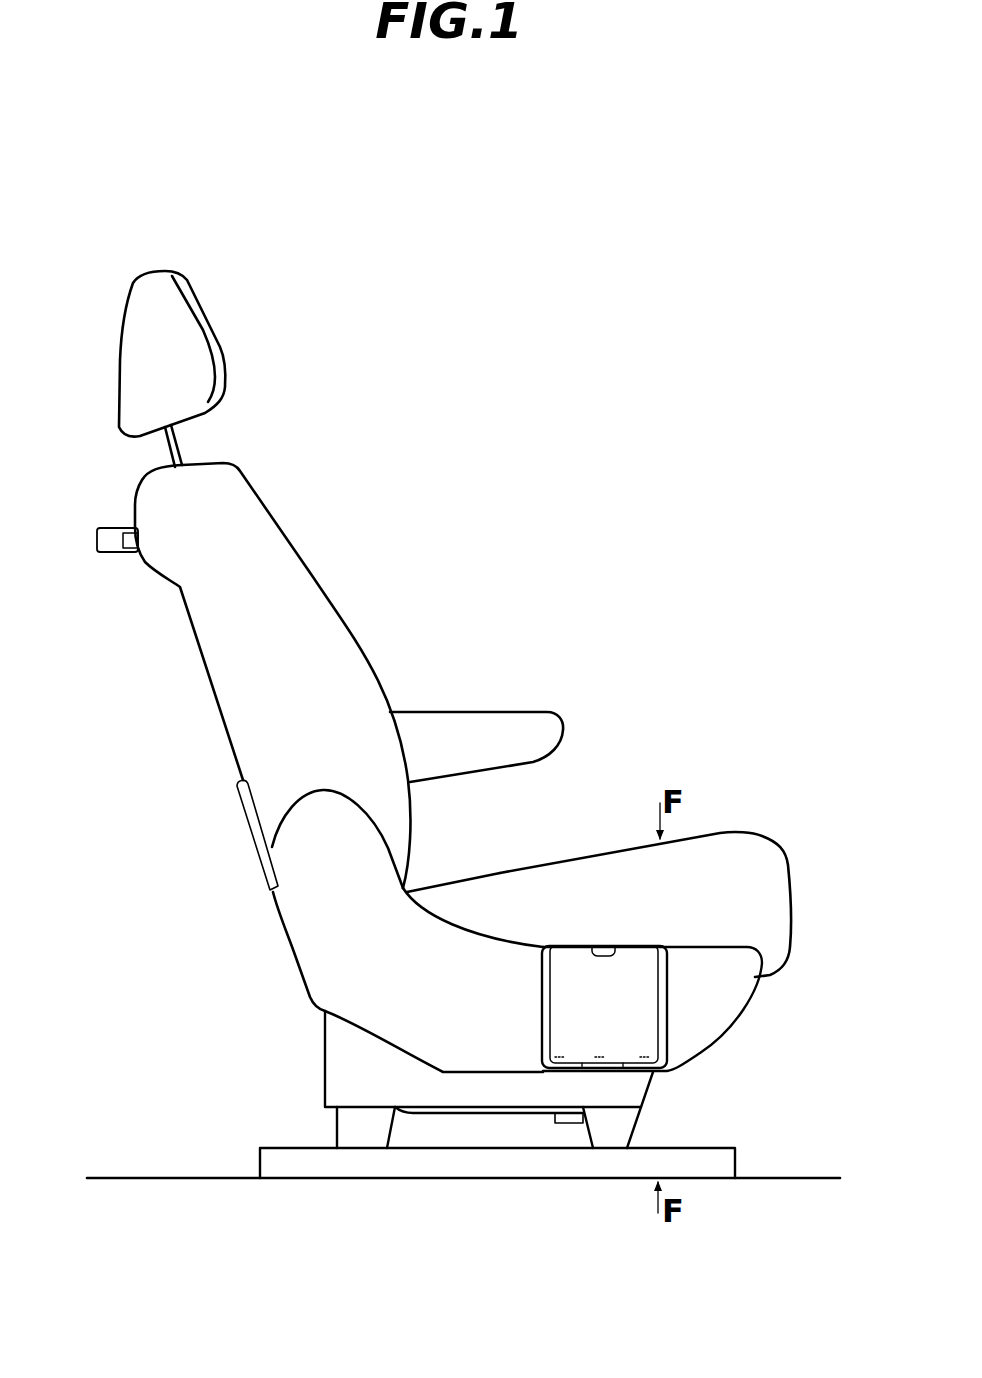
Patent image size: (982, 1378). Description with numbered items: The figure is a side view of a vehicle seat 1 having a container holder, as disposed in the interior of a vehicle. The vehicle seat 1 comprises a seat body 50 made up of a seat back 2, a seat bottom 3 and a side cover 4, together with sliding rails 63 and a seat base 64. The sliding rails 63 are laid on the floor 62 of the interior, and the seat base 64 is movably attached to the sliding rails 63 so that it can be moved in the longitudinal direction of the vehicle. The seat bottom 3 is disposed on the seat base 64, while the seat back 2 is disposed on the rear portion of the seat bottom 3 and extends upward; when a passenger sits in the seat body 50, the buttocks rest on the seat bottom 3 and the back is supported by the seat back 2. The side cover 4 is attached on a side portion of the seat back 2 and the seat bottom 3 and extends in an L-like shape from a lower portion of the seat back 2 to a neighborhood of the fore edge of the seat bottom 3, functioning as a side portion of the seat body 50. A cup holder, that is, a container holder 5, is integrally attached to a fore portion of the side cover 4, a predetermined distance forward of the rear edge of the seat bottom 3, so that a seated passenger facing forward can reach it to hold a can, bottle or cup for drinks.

The vehicle seat 1 is at (281, 253).
The seat back 2 is at (337, 607).
The seat bottom 3 is at (637, 845).
The side cover 4 is at (393, 1053).
The container holder 5 is at (538, 1050).
The seat body 50 is at (446, 880).
The floor 62 is at (162, 1180).
The sliding rails 63 is at (283, 1163).
The seat base 64 is at (334, 1078).